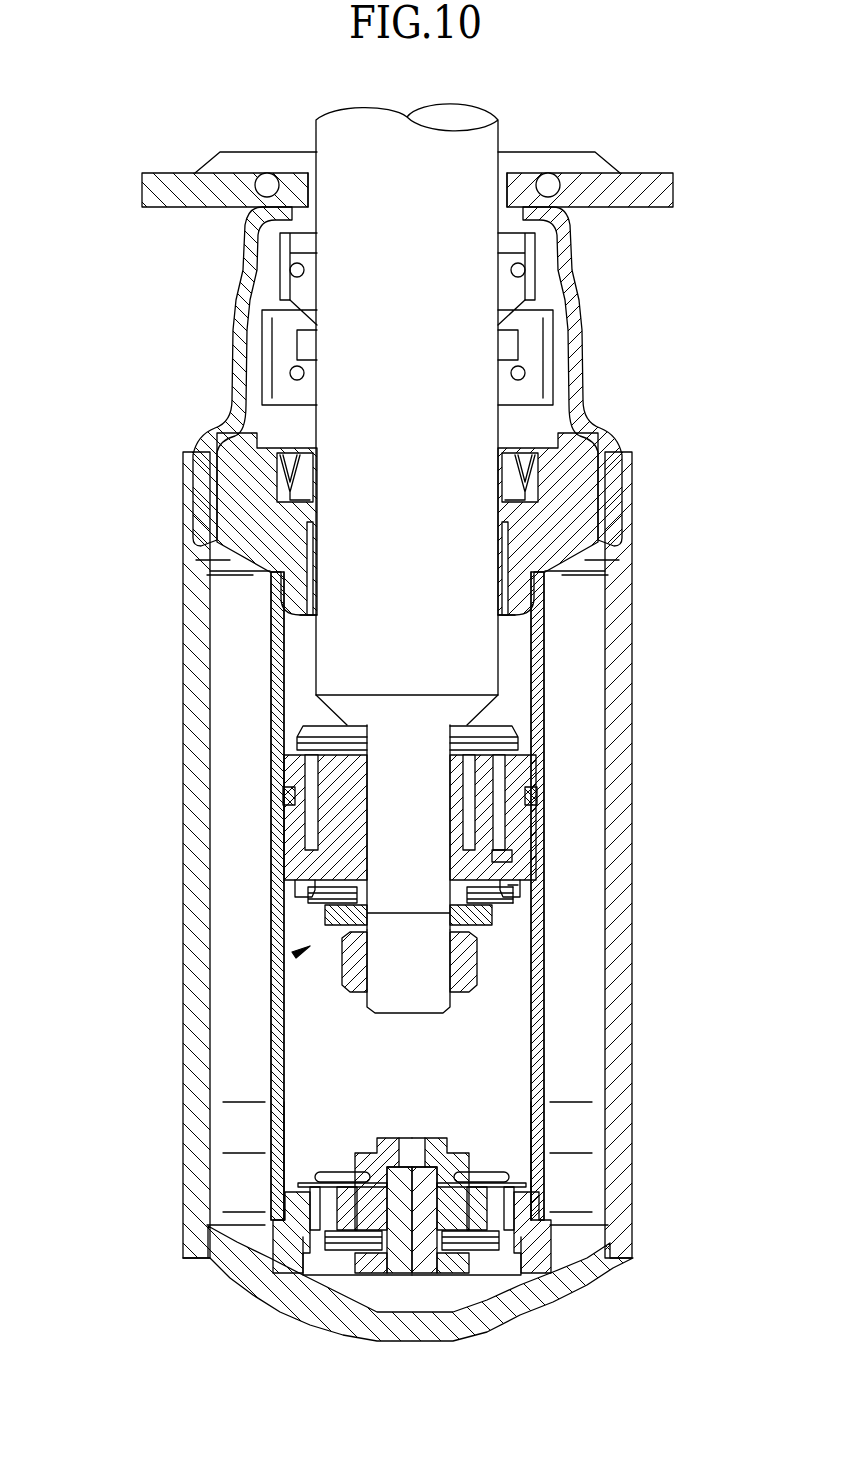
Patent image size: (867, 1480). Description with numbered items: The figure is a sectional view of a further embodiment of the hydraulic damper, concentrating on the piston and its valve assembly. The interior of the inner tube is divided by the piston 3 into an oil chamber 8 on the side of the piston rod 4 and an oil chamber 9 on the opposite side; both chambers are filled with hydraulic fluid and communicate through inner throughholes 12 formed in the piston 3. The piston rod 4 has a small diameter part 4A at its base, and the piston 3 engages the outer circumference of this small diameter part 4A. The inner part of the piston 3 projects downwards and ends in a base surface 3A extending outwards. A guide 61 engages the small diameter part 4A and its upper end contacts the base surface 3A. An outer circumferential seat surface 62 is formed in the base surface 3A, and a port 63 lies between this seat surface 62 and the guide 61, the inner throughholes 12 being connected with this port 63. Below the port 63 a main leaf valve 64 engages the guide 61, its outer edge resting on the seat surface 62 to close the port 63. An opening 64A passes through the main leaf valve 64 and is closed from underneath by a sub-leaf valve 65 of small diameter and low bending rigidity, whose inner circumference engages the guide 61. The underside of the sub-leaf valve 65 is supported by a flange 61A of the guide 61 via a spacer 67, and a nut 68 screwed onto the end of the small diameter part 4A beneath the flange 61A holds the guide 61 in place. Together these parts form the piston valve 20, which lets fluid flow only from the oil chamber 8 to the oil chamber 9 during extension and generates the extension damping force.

The piston 3 is at (537, 817).
The base surface 3A is at (365, 885).
The piston rod 4 is at (500, 653).
The small diameter part 4A is at (365, 800).
The oil chamber 8 is at (298, 683).
The oil chamber 9 is at (353, 1097).
The inner throughholes 12 is at (478, 797).
The piston valve 20 is at (308, 947).
The guide 61 is at (510, 903).
The flange 61A is at (327, 908).
The outer circumferential seat surface 62 is at (300, 877).
The port 63 is at (310, 878).
The main leaf valve 64 is at (480, 892).
The opening 64A is at (495, 858).
The sub-leaf valve 65 is at (507, 898).
The spacer 67 is at (495, 920).
The nut 68 is at (480, 980).